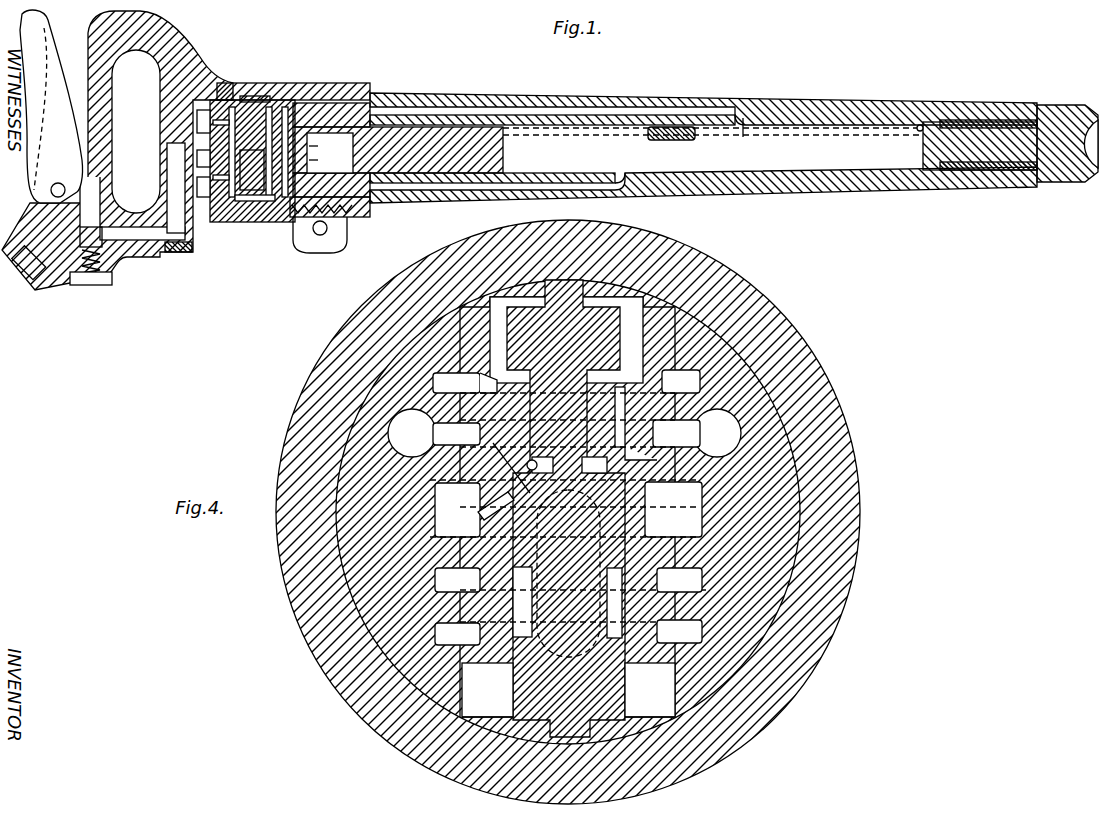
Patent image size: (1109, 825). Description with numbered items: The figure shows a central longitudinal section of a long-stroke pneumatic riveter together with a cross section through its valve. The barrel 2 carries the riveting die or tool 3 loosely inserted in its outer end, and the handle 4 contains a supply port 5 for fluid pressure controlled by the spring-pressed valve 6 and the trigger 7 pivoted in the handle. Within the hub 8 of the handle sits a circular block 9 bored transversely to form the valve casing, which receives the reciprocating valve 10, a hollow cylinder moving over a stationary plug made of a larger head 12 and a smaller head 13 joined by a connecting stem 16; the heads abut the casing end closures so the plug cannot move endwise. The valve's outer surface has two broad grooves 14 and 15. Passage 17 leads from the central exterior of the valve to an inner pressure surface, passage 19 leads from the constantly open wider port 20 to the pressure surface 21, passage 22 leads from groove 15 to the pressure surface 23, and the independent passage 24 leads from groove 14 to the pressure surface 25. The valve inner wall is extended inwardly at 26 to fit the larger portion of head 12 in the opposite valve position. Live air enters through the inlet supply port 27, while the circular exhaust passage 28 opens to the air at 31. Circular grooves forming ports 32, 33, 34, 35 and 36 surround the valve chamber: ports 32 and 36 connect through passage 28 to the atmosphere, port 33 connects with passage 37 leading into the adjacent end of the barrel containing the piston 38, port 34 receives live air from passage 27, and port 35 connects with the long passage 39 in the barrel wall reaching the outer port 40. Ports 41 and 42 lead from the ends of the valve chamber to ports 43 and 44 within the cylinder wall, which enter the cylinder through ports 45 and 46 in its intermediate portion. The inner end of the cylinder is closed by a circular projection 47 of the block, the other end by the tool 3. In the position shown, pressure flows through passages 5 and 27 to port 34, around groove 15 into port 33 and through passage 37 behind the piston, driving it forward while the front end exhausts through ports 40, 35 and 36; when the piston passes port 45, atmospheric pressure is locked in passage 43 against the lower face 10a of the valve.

In FIG. 1, the barrel 2 is at (822, 97).
In FIG. 4, the barrel 2 is at (350, 690).
In FIG. 1, the riveting die or tool 3 is at (1062, 182).
In FIG. 1, the handle 4 is at (166, 20).
In FIG. 1, the supply port 5 is at (150, 242).
In FIG. 1, the spring-pressed valve 6 is at (75, 282).
In FIG. 1, the trigger 7 is at (51, 106).
In FIG. 1, the hub of the handle 8 is at (340, 88).
In FIG. 1, the circular block 9 is at (224, 103).
In FIG. 4, the circular block 9 is at (352, 607).
In FIG. 1, the reciprocating valve 10 is at (236, 205).
In FIG. 4, the reciprocating valve 10 is at (490, 640).
In FIG. 4, the lower face of the valve 10a is at (650, 690).
In FIG. 1, the head of the valve plug 12 is at (255, 103).
In FIG. 4, the head of the valve plug 12 is at (600, 298).
In FIG. 1, the lower head of the plug 13 is at (256, 200).
In FIG. 4, the lower head of the plug 13 is at (540, 692).
In FIG. 4, the groove 14 is at (465, 395).
In FIG. 4, the groove 15 is at (459, 566).
In FIG. 4, the connecting stem 16 is at (650, 703).
In FIG. 4, the passage 17 is at (643, 423).
In FIG. 4, the passage 19 is at (690, 522).
In FIG. 4, the port 20 is at (673, 506).
In FIG. 4, the pressure surface 21 is at (522, 628).
In FIG. 4, the passage 22 is at (460, 525).
In FIG. 4, the pressure surface 23 is at (470, 432).
In FIG. 4, the passage 24 is at (520, 470).
In FIG. 4, the pressure surface 25 is at (700, 553).
In FIG. 4, the inwardly extended portion of the valve wall 26 is at (690, 315).
In FIG. 1, the inlet supply port 27 is at (205, 158).
In FIG. 4, the inlet supply port 27 is at (690, 500).
In FIG. 1, the circular exhaust passage 28 is at (208, 110).
In FIG. 1, the exhaust opening 31 is at (204, 200).
In FIG. 4, the port 32 is at (690, 632).
In FIG. 4, the port 33 is at (690, 580).
In FIG. 4, the port 34 is at (700, 492).
In FIG. 4, the port 35 is at (676, 433).
In FIG. 4, the port 36 is at (681, 381).
In FIG. 1, the passage 37 is at (327, 163).
In FIG. 1, the piston 38 is at (505, 150).
In FIG. 1, the long passage 39 is at (668, 127).
In FIG. 4, the long passage 39 is at (564, 433).
In FIG. 1, the outer port 40 is at (921, 125).
In FIG. 1, the port 41 is at (286, 222).
In FIG. 1, the port 42 is at (298, 100).
In FIG. 1, the port 43 is at (418, 188).
In FIG. 1, the port 44 is at (500, 115).
In FIG. 1, the port 45 is at (618, 176).
In FIG. 1, the port 46 is at (735, 137).
In FIG. 1, the circular projection 47 is at (327, 145).